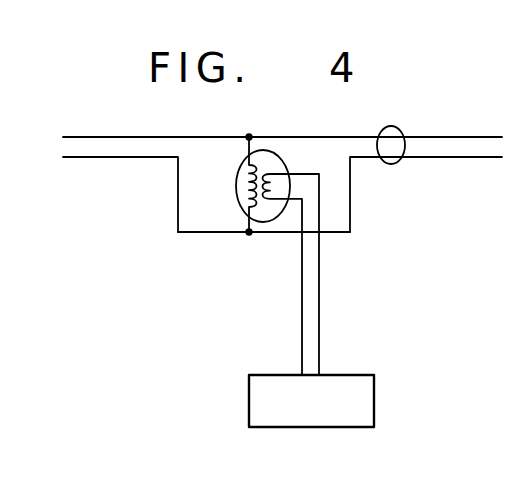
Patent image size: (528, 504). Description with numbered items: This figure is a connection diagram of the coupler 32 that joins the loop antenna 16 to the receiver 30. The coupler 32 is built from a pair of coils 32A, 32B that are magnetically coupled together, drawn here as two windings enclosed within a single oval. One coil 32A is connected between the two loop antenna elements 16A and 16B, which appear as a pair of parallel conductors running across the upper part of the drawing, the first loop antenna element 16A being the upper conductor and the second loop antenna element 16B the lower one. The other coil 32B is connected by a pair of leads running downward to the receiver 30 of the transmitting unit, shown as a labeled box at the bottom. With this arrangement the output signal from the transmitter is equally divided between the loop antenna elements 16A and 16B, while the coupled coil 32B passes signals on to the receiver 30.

The loop antenna 16 is at (381, 131).
The loop antenna element 16A is at (436, 136).
The loop antenna element 16B is at (441, 158).
The receiver 30 is at (378, 400).
The coupler 32 is at (257, 240).
The coil 32A is at (240, 172).
The coil 32B is at (274, 175).